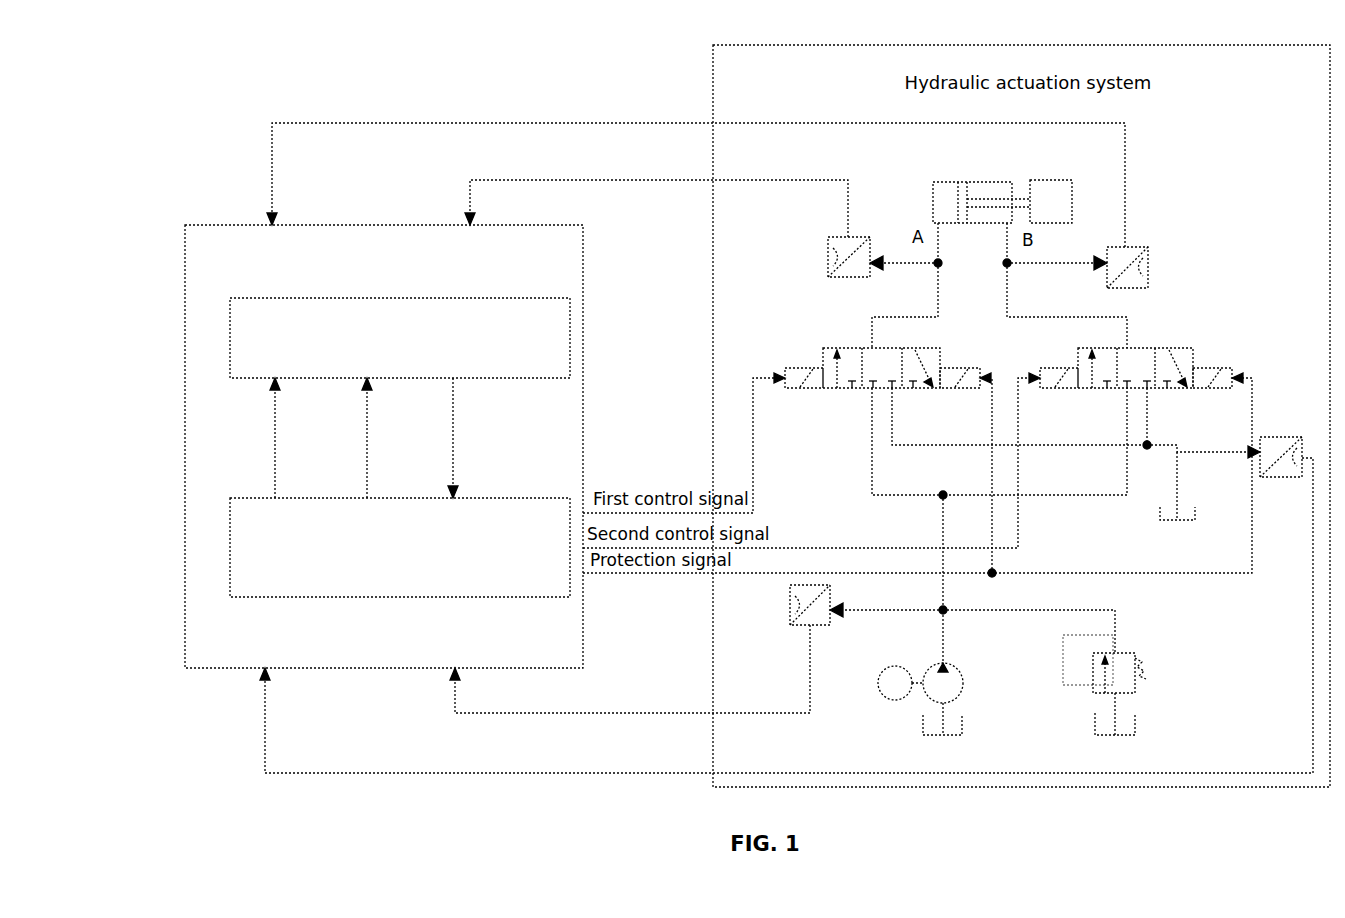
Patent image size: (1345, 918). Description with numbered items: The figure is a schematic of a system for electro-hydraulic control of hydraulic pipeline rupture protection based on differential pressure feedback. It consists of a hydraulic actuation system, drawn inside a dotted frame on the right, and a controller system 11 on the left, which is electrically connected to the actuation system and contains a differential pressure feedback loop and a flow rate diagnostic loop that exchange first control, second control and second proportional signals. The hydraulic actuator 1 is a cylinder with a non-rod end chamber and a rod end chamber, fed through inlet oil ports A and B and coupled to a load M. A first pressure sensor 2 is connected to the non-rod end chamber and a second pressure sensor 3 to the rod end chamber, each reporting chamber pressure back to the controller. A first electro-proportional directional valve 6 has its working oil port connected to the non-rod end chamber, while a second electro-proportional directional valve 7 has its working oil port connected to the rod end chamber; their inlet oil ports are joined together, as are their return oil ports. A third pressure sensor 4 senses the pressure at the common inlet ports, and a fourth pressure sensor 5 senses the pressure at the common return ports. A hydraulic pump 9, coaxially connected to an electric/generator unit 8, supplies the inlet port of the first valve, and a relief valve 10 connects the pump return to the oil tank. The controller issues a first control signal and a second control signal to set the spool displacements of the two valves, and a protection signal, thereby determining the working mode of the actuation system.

The hydraulic actuator 1 is at (972, 183).
The first pressure sensor 2 is at (832, 236).
The second pressure sensor 3 is at (1150, 247).
The third pressure sensor 4 is at (788, 612).
The fourth pressure sensor 5 is at (1280, 433).
The first electro-proportional directional valve 6 is at (823, 348).
The second electro-proportional directional valve 7 is at (1170, 350).
The electric/generator unit 8 is at (900, 670).
The hydraulic pump 9 is at (965, 675).
The relief valve 10 is at (1138, 652).
The controller system 11 is at (178, 277).